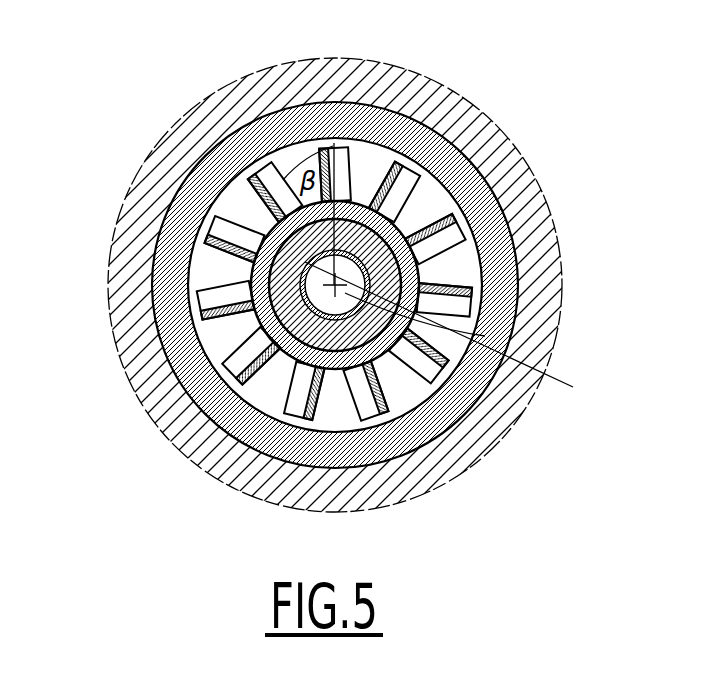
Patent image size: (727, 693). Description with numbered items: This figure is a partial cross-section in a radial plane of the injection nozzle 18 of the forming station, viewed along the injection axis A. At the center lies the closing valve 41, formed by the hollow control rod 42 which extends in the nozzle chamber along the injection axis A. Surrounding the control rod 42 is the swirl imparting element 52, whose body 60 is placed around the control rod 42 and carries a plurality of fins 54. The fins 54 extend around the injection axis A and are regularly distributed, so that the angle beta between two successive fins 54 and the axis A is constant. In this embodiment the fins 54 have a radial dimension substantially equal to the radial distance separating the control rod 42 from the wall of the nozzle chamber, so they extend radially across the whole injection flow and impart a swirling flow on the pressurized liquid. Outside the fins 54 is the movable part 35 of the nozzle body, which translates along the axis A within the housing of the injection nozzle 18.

The injection nozzle 18 is at (492, 152).
The movable part 35 is at (505, 210).
The closing valve 41 is at (462, 285).
The hollow control rod 42 is at (410, 280).
The swirl imparting element 52 is at (263, 213).
The fins 54 is at (337, 168).
The body 60 is at (255, 328).
The injection axis A is at (450, 339).